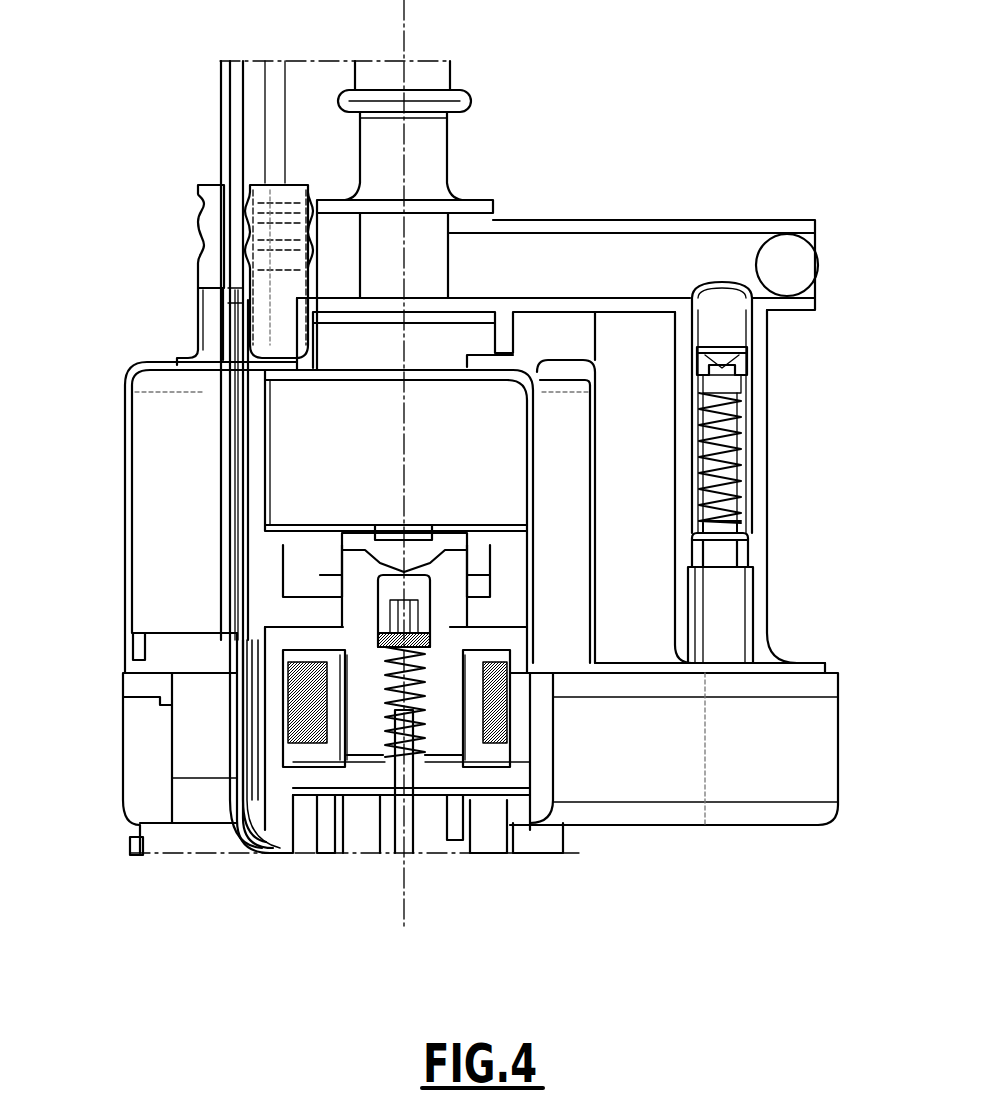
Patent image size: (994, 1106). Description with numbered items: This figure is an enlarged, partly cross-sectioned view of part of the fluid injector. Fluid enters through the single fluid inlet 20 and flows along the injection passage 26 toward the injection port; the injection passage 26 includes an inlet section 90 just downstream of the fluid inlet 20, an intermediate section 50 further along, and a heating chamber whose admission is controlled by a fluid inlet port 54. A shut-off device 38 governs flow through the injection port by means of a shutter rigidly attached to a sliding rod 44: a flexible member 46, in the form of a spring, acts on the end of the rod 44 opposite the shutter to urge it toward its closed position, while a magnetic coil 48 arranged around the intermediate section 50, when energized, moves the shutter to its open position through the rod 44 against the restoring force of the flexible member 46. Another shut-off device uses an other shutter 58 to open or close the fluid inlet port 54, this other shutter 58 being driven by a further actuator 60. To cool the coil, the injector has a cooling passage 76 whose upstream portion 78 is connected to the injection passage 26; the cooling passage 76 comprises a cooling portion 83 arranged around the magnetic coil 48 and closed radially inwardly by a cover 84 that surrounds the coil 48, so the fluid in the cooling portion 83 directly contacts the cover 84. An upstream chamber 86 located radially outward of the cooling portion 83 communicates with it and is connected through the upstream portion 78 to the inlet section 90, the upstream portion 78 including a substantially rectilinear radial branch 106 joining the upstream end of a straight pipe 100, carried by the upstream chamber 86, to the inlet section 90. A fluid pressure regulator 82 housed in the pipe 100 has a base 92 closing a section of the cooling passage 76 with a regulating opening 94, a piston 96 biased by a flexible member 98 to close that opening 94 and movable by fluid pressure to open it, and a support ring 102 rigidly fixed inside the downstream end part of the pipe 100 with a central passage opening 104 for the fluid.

The fluid inlet 20 is at (432, 72).
The injection passage 26 is at (370, 822).
The shut-off device 38 is at (530, 653).
The sliding rod 44 is at (398, 838).
The flexible member 46 is at (420, 767).
The magnetic coil 48 is at (482, 767).
The intermediate section 50 is at (407, 635).
The fluid inlet port 54 is at (407, 600).
The other shutter 58 is at (406, 548).
The further actuator 60 is at (330, 466).
The cooling passage 76 is at (660, 203).
The upstream portion 78 is at (540, 268).
The fluid pressure regulator 82 is at (690, 408).
The cooling portion 83 is at (207, 718).
The cover 84 is at (283, 762).
The upstream chamber 86 is at (813, 747).
The inlet section 90 is at (415, 240).
The base 92 is at (740, 355).
The opening 94 is at (720, 335).
The piston 96 is at (730, 383).
The flexible member 98 is at (747, 437).
The pipe 100 is at (760, 607).
The support ring 102 is at (740, 558).
The central passage opening 104 is at (752, 498).
The radial branch 106 is at (618, 225).